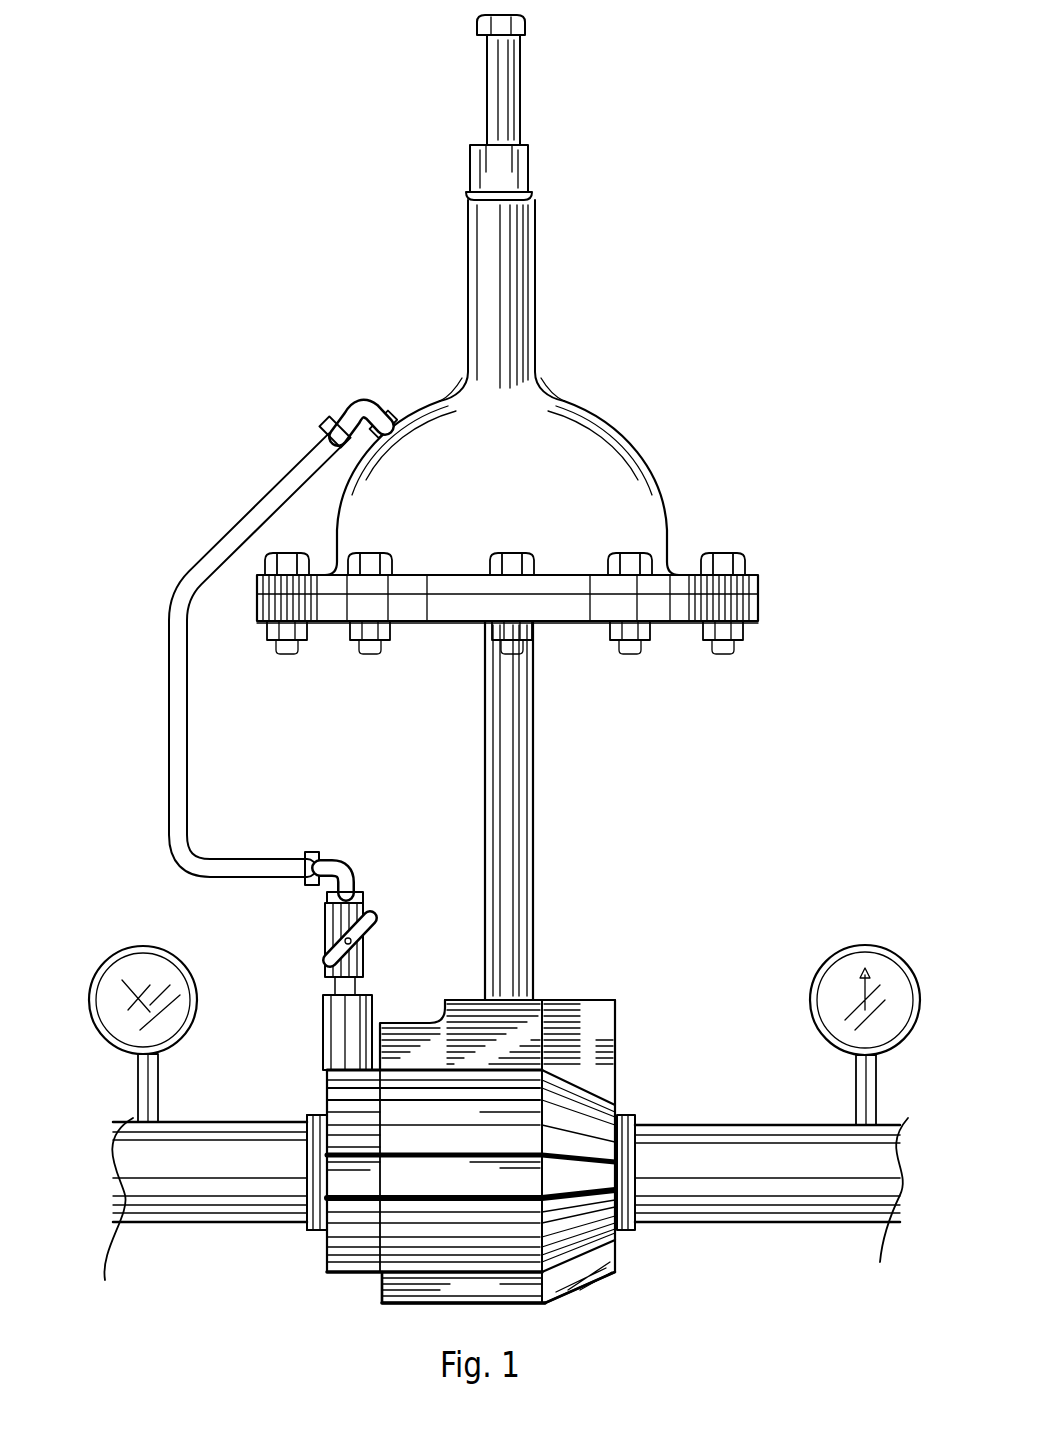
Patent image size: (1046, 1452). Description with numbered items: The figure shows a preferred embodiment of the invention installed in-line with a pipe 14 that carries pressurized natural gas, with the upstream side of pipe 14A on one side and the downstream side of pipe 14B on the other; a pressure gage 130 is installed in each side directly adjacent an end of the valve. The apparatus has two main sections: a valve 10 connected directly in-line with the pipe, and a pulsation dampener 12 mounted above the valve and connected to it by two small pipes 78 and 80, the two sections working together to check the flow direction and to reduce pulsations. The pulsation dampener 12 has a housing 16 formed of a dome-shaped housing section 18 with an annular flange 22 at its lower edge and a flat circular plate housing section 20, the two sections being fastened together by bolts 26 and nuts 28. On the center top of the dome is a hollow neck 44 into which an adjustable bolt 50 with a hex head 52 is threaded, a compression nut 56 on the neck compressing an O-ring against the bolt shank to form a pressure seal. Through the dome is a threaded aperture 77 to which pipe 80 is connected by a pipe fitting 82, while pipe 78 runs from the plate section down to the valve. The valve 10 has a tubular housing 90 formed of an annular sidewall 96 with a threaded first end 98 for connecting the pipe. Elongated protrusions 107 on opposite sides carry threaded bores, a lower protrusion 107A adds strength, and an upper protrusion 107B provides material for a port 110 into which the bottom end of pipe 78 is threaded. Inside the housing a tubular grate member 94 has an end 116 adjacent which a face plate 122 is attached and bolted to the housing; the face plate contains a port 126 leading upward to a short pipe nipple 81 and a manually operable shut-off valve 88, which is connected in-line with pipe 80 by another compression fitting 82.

The valve 10 is at (642, 1039).
The pulsation dampener 12 is at (592, 351).
The pipe 14 is at (138, 1163).
The upstream side of pipe 14A is at (843, 1225).
The downstream side of pipe 14B is at (150, 1237).
The housing 16 is at (617, 430).
The housing section 18 is at (660, 487).
The housing section 20 is at (683, 623).
The annular flange 22 is at (758, 582).
The bolts 26 is at (744, 559).
The nuts 28 is at (744, 637).
The neck 44 is at (536, 281).
The bolt 50 is at (520, 88).
The hex head 52 is at (477, 26).
The compression nut 56 is at (470, 165).
The aperture 77 is at (397, 416).
The pipe 78 is at (535, 870).
The pipe 80 is at (212, 543).
The pipe nipple 81 is at (363, 955).
The pipe fitting 82 is at (352, 400).
The shut-off valve 88 is at (322, 913).
The housing 90 is at (418, 1280).
The tubular grate member 94 is at (310, 1230).
The annular sidewall 96 is at (447, 1100).
The first end 98 is at (620, 1113).
The elongated protrusions 107 is at (340, 1273).
The lower protrusion 107A is at (593, 1283).
The upper protrusion 107B is at (614, 1010).
The port 110 is at (540, 1000).
The end of tubular grate member 116 is at (308, 1114).
The face plate 122 is at (345, 1083).
The port 126 is at (325, 995).
The pressure gage 130 is at (127, 947).